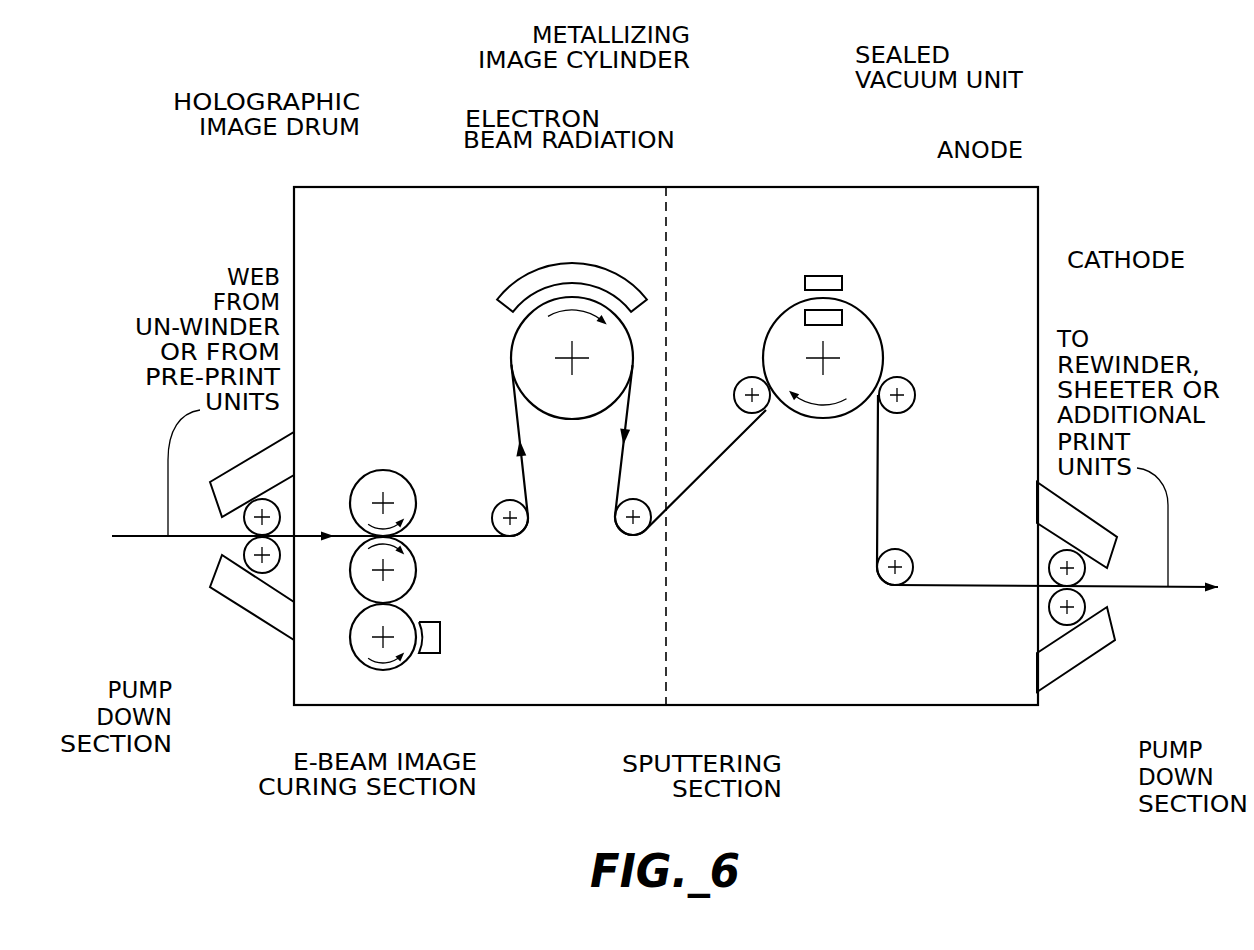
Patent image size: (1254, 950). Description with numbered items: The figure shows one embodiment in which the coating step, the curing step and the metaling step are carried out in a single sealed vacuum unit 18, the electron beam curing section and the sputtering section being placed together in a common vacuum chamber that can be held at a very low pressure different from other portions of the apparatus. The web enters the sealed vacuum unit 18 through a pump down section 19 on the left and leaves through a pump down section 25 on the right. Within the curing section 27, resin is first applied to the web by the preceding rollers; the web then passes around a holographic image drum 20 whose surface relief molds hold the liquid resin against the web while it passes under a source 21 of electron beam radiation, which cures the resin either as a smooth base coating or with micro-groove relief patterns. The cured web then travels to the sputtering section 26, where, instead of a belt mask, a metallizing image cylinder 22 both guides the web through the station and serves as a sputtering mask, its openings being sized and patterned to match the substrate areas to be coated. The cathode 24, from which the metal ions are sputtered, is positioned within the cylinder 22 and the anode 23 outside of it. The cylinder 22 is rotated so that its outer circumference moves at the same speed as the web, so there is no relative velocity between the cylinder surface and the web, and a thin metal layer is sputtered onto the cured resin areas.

The sealed vacuum unit 18 is at (805, 216).
The pump down section 19 is at (235, 603).
The holographic image drum 20 is at (523, 350).
The source of electron beam radiation 21 is at (513, 282).
The metallizing image cylinder 22 is at (785, 340).
The anode 23 is at (823, 276).
The cathode 24 is at (842, 318).
The pump down section 25 is at (1088, 638).
The sputtering section 26 is at (823, 685).
The curing section 27 is at (542, 685).